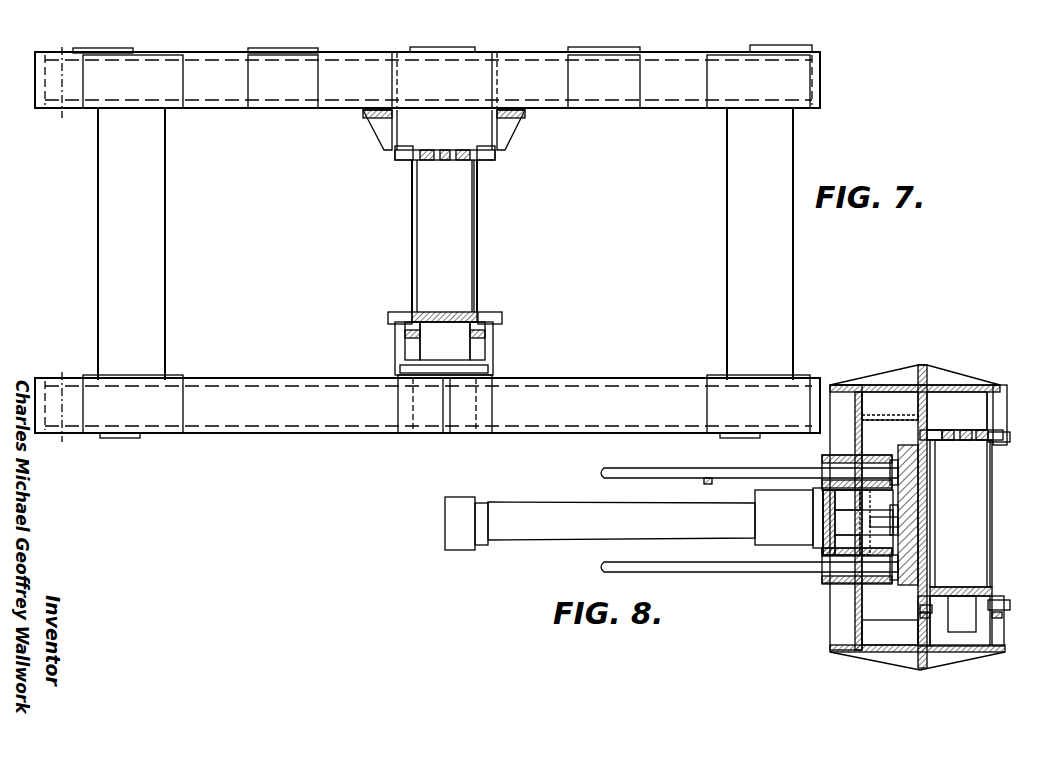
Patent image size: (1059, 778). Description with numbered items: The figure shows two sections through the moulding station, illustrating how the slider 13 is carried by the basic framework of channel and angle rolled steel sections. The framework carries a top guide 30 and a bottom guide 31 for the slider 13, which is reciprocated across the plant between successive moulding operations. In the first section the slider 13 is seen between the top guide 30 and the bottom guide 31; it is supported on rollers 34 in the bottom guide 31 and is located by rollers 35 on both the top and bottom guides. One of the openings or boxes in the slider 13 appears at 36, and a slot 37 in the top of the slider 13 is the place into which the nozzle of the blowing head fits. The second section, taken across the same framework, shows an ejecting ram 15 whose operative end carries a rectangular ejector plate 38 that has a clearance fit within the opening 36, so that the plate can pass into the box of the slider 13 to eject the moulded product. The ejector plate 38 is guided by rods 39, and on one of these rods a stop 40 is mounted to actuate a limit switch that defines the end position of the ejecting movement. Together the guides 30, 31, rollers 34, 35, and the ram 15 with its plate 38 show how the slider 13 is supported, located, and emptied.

In FIG. 7, the slider 13 is at (477, 205).
In FIG. 8, the slider 13 is at (992, 587).
In FIG. 8, the ejecting ram 15 is at (630, 534).
In FIG. 7, the top guide 30 is at (232, 104).
In FIG. 8, the top guide 30 is at (983, 392).
In FIG. 7, the bottom guide 31 is at (256, 424).
In FIG. 8, the bottom guide 31 is at (960, 652).
In FIG. 7, the rollers 34 is at (461, 351).
In FIG. 8, the rollers 34 is at (978, 626).
In FIG. 7, the rollers 35 is at (400, 160).
In FIG. 8, the rollers 35 is at (920, 434).
In FIG. 7, the opening 36 is at (462, 251).
In FIG. 8, the opening 36 is at (982, 567).
In FIG. 7, the slot 37 is at (440, 160).
In FIG. 8, the slot 37 is at (955, 440).
In FIG. 8, the ejector plate 38 is at (915, 495).
In FIG. 8, the guide rods 39 is at (778, 468).
In FIG. 8, the stop 40 is at (706, 476).